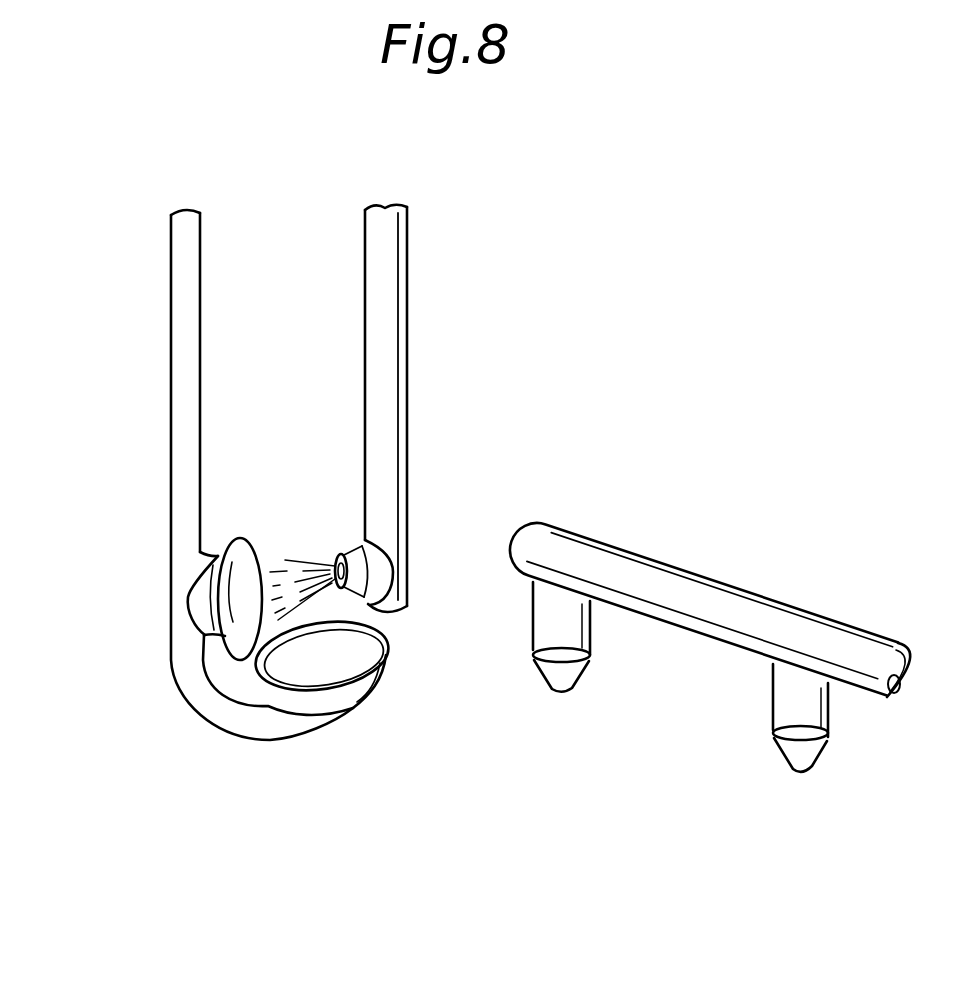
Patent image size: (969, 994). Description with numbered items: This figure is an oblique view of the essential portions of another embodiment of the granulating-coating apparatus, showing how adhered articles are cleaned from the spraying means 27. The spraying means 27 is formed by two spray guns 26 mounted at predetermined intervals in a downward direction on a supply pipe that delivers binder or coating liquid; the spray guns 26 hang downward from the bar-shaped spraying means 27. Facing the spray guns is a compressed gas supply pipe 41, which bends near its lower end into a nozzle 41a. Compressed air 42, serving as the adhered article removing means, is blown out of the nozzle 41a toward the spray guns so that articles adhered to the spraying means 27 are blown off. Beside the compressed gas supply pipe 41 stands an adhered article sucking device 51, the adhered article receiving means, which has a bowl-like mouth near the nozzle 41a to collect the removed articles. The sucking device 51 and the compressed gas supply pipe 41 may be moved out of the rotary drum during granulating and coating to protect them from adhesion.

The adhered article sucking device 51 is at (180, 497).
The compressed gas supply pipe 41 is at (405, 378).
The nozzle 41a is at (338, 550).
The compressed air 42 is at (287, 558).
The spraying means 27 is at (567, 530).
The spray guns 26 is at (590, 657).